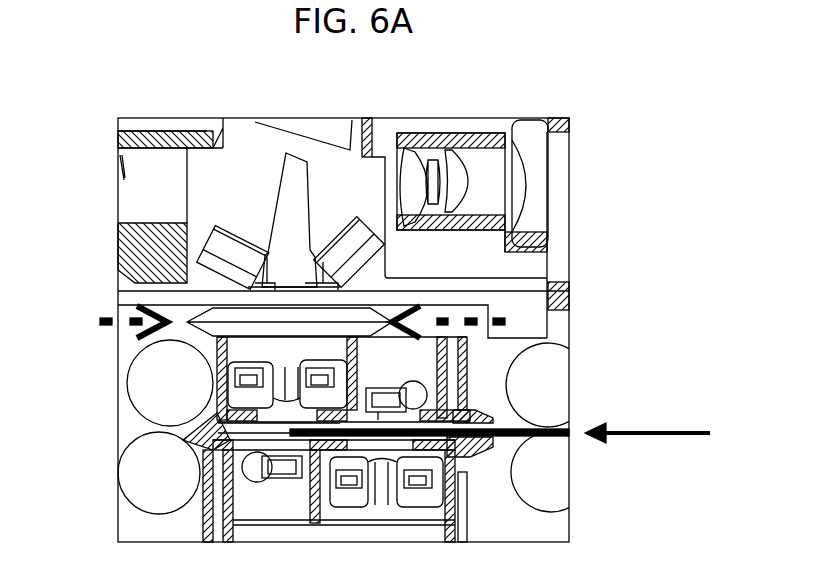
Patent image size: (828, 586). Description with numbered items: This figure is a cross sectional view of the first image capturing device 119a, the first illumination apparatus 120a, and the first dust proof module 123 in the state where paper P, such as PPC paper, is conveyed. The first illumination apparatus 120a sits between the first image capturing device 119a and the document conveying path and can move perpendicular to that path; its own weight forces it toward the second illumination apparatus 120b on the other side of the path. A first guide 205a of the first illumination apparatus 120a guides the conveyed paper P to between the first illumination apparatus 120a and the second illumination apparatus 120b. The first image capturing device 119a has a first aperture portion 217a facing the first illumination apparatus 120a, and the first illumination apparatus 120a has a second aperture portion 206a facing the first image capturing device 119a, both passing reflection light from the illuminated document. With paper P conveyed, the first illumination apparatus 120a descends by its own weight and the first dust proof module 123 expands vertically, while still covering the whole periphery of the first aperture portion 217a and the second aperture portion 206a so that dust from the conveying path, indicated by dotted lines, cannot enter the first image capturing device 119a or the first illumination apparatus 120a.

The first image capturing device 119a is at (560, 152).
The second aperture portion 206a is at (243, 337).
The first aperture portion 217a is at (290, 287).
The first dust proof module 123 is at (207, 323).
The first illumination apparatus 120a is at (440, 368).
The first guide 205a is at (487, 417).
The paper P is at (571, 433).
The second illumination apparatus 120b is at (445, 483).